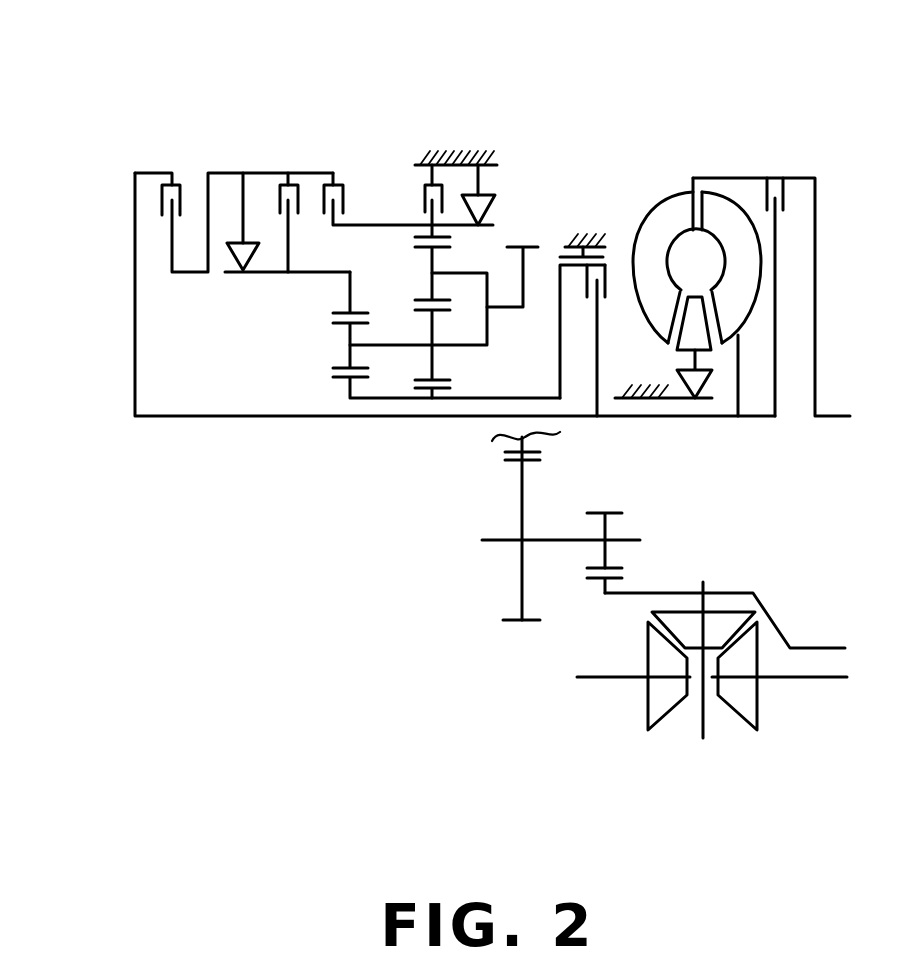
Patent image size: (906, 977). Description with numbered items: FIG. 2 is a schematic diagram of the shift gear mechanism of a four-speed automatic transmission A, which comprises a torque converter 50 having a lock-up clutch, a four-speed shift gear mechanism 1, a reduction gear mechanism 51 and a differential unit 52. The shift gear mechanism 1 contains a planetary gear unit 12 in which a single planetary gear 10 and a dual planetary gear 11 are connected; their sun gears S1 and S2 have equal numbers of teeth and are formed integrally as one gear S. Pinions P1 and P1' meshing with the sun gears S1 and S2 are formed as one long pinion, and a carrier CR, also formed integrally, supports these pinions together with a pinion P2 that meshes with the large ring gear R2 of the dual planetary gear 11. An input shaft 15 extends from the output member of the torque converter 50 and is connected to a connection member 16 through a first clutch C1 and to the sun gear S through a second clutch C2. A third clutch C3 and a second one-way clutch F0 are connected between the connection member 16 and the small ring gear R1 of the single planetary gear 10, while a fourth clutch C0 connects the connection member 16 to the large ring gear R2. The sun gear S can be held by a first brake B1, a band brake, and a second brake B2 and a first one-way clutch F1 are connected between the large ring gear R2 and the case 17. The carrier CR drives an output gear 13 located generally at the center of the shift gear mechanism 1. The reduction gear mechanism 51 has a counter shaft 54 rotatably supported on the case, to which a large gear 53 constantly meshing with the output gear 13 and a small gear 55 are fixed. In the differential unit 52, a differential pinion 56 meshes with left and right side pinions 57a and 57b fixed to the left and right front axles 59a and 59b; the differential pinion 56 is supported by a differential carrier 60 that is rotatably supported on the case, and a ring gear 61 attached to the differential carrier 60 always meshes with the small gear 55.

The four-speed shift gear mechanism 1 is at (126, 156).
The four-speed automatic transmission A is at (192, 128).
The connection member 16 is at (255, 173).
The planetary gear unit 12 is at (337, 53).
The single planetary gear 10 is at (347, 260).
The dual planetary gear 11 is at (411, 210).
The transmission case 17 is at (496, 162).
The output gear 13 is at (520, 247).
The torque converter 50 is at (700, 168).
The input shaft 15 is at (648, 418).
The reduction gear mechanism 51 is at (498, 572).
The large gear 53 is at (523, 588).
The counter shaft 54 is at (558, 538).
The small gear 55 is at (607, 530).
The ring gear 61 is at (607, 590).
The differential carrier 60 is at (780, 630).
The differential unit 52 is at (626, 720).
The differential pinion 56 is at (728, 625).
The left side pinion 57a is at (667, 712).
The right side pinion 57b is at (747, 713).
The left front axle 59a is at (575, 682).
The right front axle 59b is at (805, 682).
The first clutch C1 is at (167, 158).
The second one-way clutch F0 is at (225, 158).
The third clutch C3 is at (285, 158).
The fourth clutch C0 is at (336, 158).
The second brake B2 is at (435, 126).
The first one-way clutch F1 is at (480, 126).
The large ring gear R2 is at (462, 233).
The first brake B1 is at (554, 204).
The second clutch C2 is at (599, 204).
The pinion P2 is at (432, 268).
The small ring gear R1 is at (350, 296).
The pinion P1 is at (314, 355).
The carrier CR is at (478, 350).
The sun gear S1 is at (362, 387).
The sun gear S2 is at (425, 387).
The sun gear S is at (335, 480).
The pinion P1' is at (463, 433).